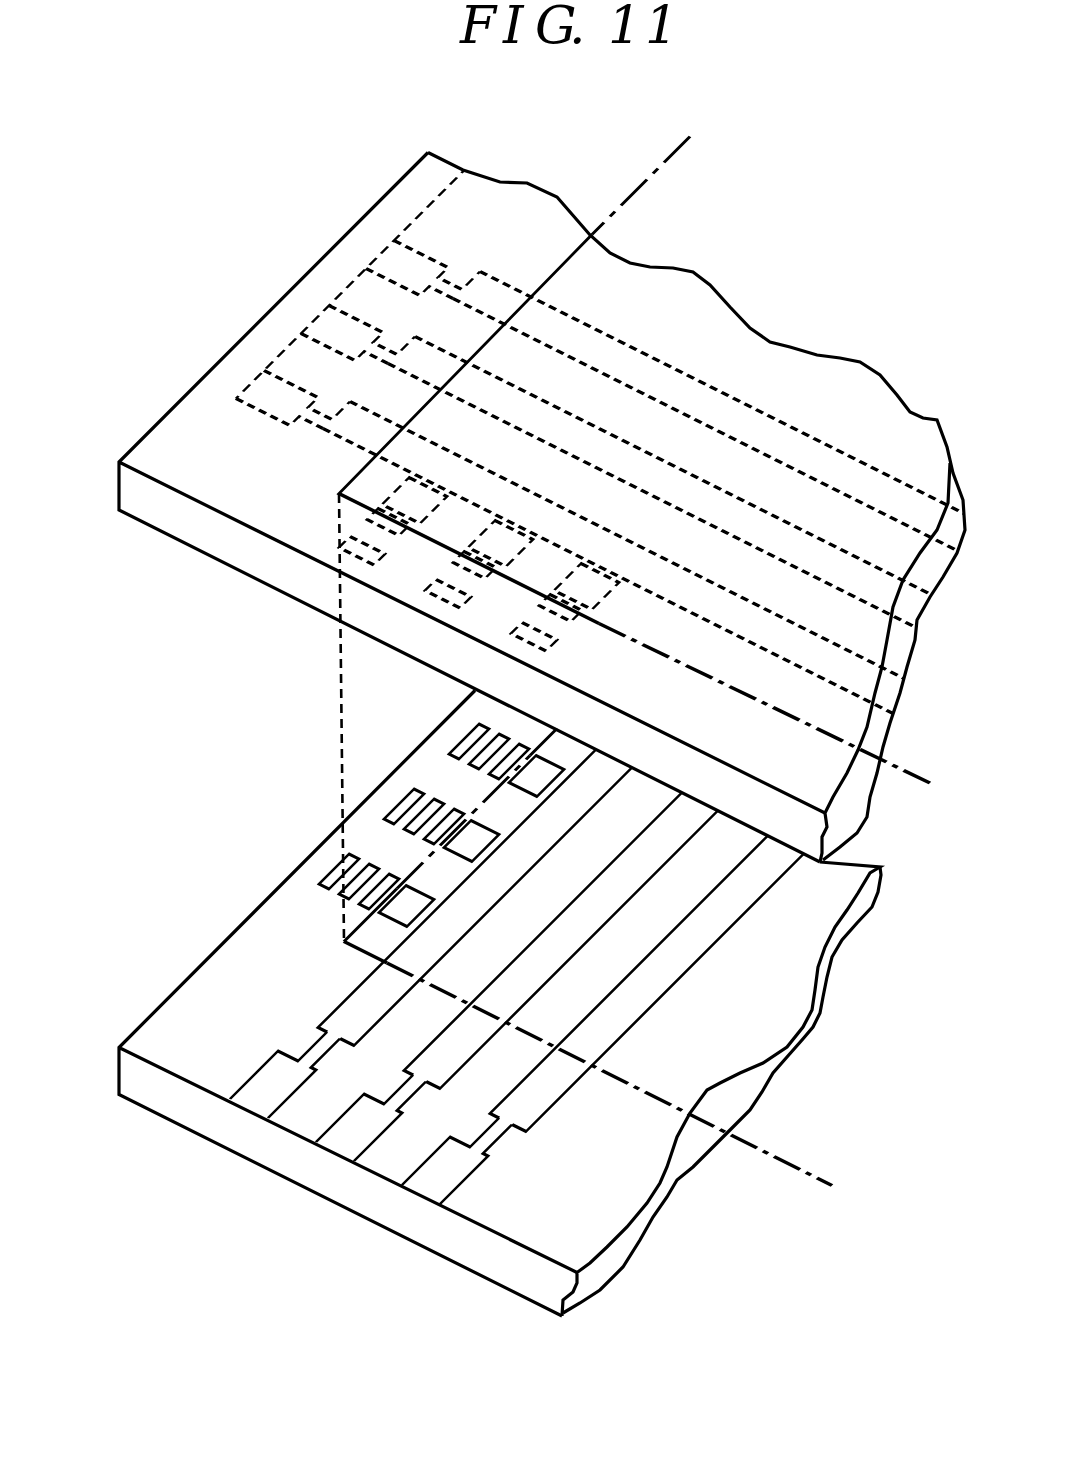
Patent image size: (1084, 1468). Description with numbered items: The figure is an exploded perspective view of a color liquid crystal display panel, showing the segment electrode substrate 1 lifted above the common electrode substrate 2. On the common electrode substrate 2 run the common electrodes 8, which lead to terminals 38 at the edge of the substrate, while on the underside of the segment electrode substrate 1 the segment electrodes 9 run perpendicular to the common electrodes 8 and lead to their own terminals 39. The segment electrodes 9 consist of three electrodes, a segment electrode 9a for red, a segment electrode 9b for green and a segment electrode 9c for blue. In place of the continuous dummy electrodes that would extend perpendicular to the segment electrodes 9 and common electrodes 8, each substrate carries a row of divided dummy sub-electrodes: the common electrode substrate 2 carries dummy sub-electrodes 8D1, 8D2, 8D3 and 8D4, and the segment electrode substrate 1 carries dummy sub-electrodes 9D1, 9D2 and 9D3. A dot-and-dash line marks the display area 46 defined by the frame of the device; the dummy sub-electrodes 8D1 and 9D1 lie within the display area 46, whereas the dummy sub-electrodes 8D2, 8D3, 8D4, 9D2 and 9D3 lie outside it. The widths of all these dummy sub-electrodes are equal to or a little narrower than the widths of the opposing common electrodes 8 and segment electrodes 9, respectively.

The segment electrode substrate 1 is at (503, 197).
The common electrode substrate 2 is at (208, 991).
The common electrodes 8 is at (360, 1001).
The segment electrodes 9 is at (703, 480).
The segment electrode for red 9a is at (463, 467).
The segment electrode for green 9b is at (602, 426).
The segment electrode for blue 9c is at (660, 379).
The dummy sub-electrode 9D1 is at (393, 495).
The dummy sub-electrode 9D2 is at (373, 524).
The dummy sub-electrode 9D3 is at (357, 555).
The dummy sub-electrode 8D1 is at (425, 898).
The dummy sub-electrode 8D2 is at (382, 882).
The dummy sub-electrode 8D3 is at (366, 877).
The dummy sub-electrode 8D4 is at (347, 869).
The terminals for the common electrodes 38 is at (436, 1186).
The terminals for the segment electrodes 39 is at (267, 387).
The display area 46 is at (742, 678).